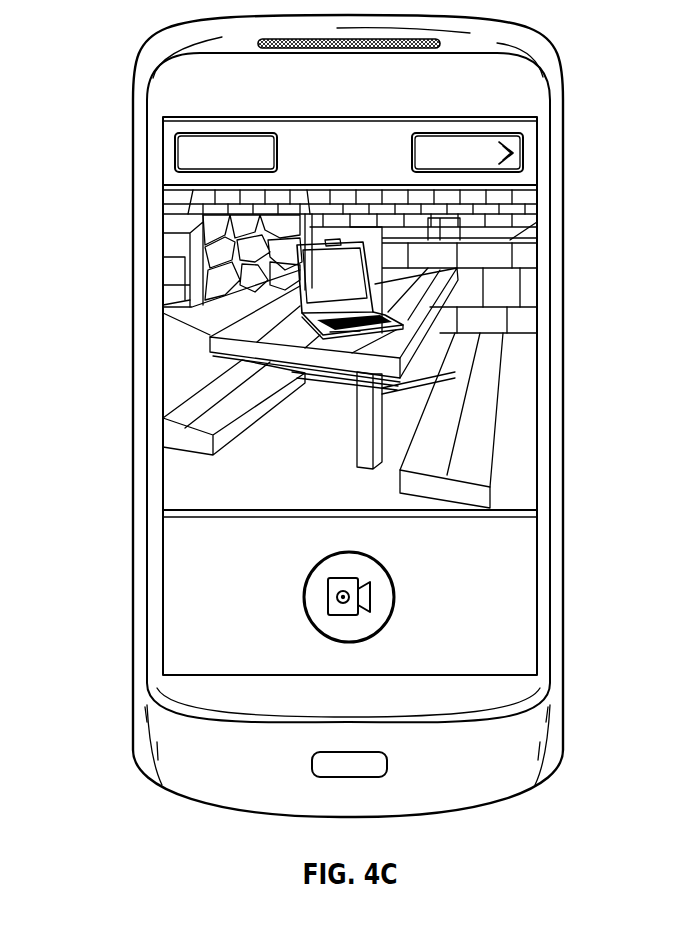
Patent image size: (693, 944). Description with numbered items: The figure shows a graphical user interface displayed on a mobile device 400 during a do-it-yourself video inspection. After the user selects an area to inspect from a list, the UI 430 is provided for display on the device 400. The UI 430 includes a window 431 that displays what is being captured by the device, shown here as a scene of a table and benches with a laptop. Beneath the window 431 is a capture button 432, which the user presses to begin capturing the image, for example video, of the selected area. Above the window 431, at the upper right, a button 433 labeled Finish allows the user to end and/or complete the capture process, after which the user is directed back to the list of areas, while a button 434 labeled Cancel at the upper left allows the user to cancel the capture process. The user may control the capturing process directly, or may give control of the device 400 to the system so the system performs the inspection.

The mobile device 400 is at (152, 50).
The UI 430 is at (164, 313).
The window 431 is at (509, 320).
The capture button 432 is at (350, 553).
The button 433 is at (525, 152).
The button 434 is at (173, 152).